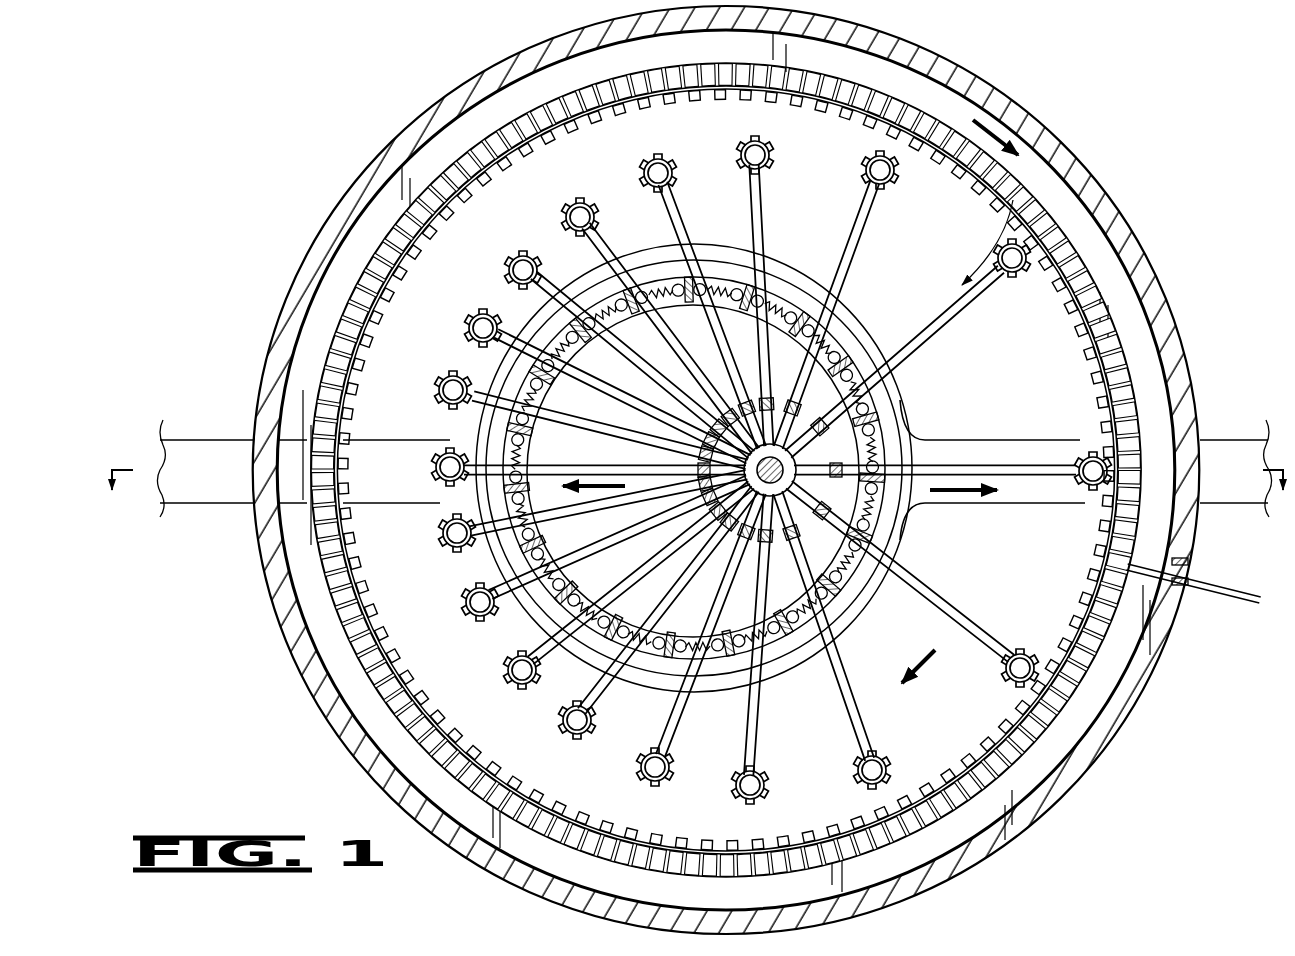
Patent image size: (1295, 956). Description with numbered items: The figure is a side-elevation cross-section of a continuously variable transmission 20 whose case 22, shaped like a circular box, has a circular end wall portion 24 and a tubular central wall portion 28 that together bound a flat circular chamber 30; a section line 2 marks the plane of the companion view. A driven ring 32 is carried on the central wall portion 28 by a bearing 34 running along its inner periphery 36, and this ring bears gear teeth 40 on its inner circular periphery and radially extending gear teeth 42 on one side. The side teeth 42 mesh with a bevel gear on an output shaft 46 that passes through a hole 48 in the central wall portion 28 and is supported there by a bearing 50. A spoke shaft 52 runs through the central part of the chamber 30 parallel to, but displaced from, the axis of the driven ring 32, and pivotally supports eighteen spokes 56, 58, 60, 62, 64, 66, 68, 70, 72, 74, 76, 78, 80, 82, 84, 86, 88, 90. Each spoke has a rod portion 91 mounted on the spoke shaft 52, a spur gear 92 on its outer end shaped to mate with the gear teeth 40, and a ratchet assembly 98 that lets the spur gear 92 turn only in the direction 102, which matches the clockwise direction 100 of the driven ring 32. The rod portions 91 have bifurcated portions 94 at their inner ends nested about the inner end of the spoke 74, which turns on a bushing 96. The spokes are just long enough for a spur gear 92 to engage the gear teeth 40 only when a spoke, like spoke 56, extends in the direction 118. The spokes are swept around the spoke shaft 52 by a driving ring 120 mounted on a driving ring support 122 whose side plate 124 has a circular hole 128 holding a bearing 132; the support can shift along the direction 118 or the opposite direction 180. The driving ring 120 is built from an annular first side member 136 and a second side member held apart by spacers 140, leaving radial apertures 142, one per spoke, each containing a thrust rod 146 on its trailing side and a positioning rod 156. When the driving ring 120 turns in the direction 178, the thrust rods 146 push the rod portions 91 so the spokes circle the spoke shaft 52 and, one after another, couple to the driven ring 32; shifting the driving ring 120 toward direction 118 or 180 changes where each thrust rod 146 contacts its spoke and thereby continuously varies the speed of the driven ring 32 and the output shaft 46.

The section line 2 is at (700, 494).
The continuously variable transmission 20 is at (1149, 140).
The case 22 is at (1099, 179).
The circular end wall portion 24 is at (1040, 382).
The central wall portion 28 is at (1114, 208).
The chamber 30 is at (1058, 740).
The driven ring 32 is at (1099, 277).
The bearing 34 is at (1128, 288).
The inner periphery 36 is at (1154, 350).
The gear teeth 40 is at (1086, 684).
The gear teeth 42 is at (1108, 637).
The shaft 46 is at (1240, 586).
The hole 48 is at (1190, 590).
The bearing 50 is at (1193, 565).
The spoke shaft 52 is at (796, 468).
The spoke 56 is at (980, 462).
The spoke 58 is at (1072, 161).
The spoke 60 is at (878, 203).
The spoke 62 is at (772, 192).
The spoke 64 is at (681, 197).
The spoke 66 is at (588, 248).
The spoke 68 is at (541, 297).
The spoke 70 is at (500, 346).
The spoke 72 is at (468, 398).
The spoke 74 is at (442, 504).
The spoke 76 is at (472, 560).
The spoke 78 is at (511, 605).
The spoke 80 is at (545, 640).
The spoke 82 is at (588, 691).
The spoke 84 is at (662, 723).
The spoke 86 is at (765, 744).
The spoke 88 is at (868, 728).
The spoke 90 is at (960, 612).
The rod portion 91 is at (562, 468).
The spur gear 92 is at (1082, 492).
The bifurcated portion 94 is at (902, 510).
The bushing 96 is at (848, 612).
The ratchet assembly 98 is at (456, 432).
The directional arrow 100 is at (1030, 115).
The directional arrow 102 is at (1045, 275).
The directional arrow 118 is at (966, 500).
The driving ring 120 is at (798, 265).
The driving ring support 122 is at (182, 505).
The side plate 124 is at (178, 450).
The circular hole 128 is at (830, 285).
The bearing 132 is at (790, 250).
The first side member 136 is at (838, 325).
The spacer 140 is at (846, 385).
The aperture 142 is at (845, 345).
The thrust rod 146 is at (835, 305).
The positioning rod 156 is at (850, 365).
The directional arrow 178 is at (932, 679).
The direction 180 is at (588, 500).